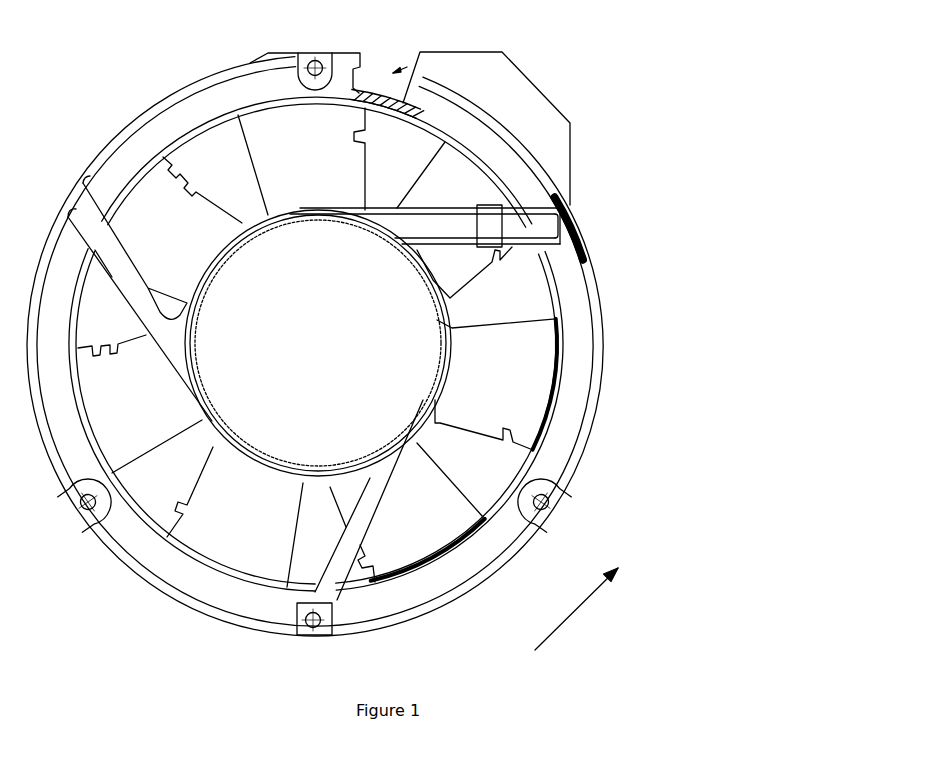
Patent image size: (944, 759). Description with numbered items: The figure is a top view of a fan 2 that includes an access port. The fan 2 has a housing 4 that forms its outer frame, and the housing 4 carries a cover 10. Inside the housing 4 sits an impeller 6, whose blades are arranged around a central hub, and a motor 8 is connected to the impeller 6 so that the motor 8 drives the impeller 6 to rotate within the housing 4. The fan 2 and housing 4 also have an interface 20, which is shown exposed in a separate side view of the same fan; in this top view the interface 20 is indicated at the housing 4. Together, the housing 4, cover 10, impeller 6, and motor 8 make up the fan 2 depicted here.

The fan 2 is at (422, 351).
The housing 4 is at (582, 453).
The impeller 6 is at (527, 368).
The motor 8 is at (395, 324).
The cover 10 is at (574, 206).
The interface 20 is at (672, 226).